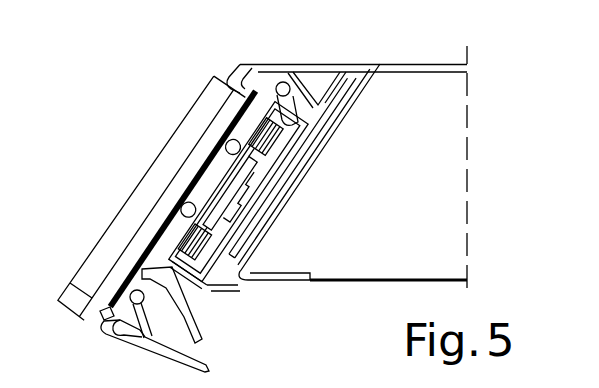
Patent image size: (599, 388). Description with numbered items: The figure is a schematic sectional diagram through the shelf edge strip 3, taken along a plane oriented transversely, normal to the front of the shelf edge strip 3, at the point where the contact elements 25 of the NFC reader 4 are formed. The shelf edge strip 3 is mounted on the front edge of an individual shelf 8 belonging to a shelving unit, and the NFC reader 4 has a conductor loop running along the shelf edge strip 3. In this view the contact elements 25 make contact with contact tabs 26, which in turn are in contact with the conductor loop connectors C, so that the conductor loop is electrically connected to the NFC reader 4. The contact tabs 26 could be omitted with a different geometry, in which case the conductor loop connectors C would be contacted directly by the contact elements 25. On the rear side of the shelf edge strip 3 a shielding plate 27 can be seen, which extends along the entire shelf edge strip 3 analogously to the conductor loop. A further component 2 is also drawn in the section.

The cover / mating component 2 is at (115, 252).
The shelf edge strip 3 is at (250, 63).
The NFC reader 4 is at (212, 286).
The shelf 8 is at (453, 141).
The contact elements 25 is at (306, 168).
The contact tabs 26 is at (240, 130).
The shielding plate 27 is at (289, 197).
The conductor loop connectors C is at (187, 188).